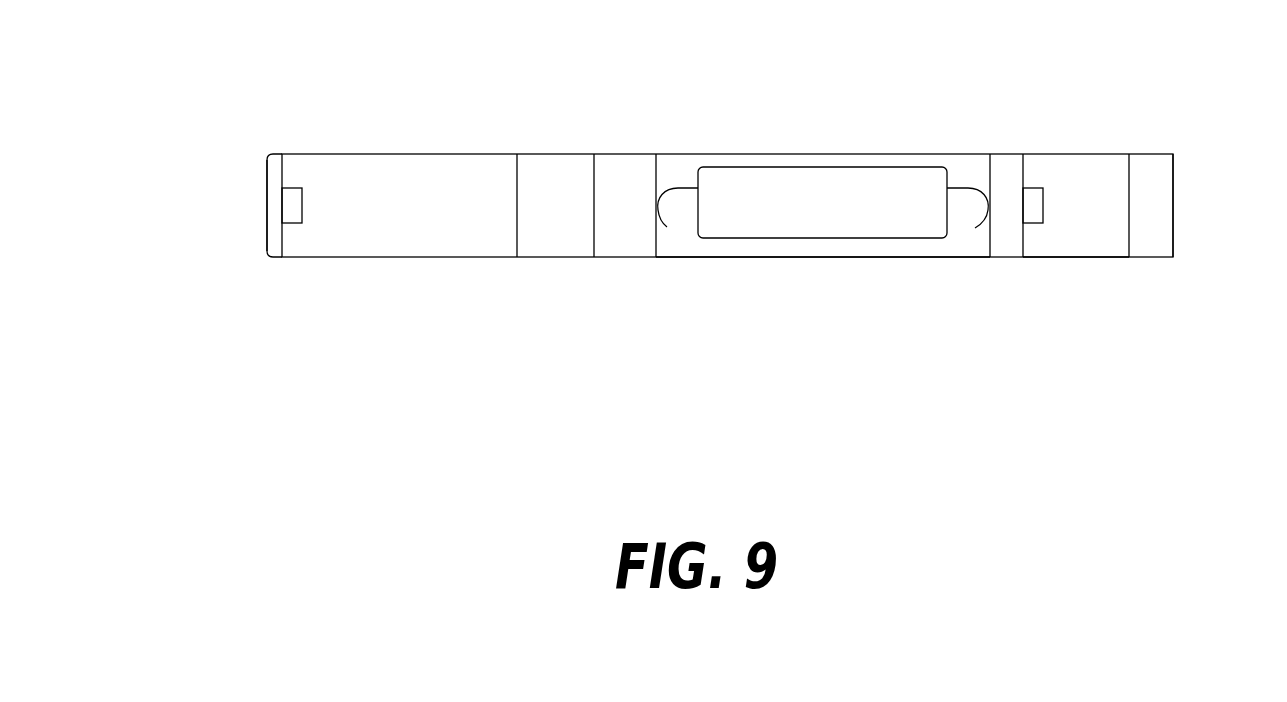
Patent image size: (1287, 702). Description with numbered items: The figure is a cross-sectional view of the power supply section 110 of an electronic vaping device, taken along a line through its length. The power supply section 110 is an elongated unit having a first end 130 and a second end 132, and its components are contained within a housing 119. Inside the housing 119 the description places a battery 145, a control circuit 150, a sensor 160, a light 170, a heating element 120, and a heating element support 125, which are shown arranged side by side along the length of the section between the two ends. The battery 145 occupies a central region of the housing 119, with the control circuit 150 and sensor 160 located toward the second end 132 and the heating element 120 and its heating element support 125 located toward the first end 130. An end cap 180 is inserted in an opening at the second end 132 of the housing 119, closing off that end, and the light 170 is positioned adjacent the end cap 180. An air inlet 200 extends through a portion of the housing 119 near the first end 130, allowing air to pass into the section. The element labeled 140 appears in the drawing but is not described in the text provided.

The power supply section 110 is at (1075, 154).
The housing 119 is at (847, 257).
The heating element 120 is at (1043, 205).
The heating element support 125 is at (1004, 167).
The first end 130 is at (1173, 154).
The second end 132 is at (291, 151).
The mounting bracket 140 is at (697, 248).
The battery 145 is at (818, 188).
The control circuit 150 is at (622, 175).
The sensor 160 is at (538, 173).
The light 170 is at (302, 205).
The end cap 180 is at (267, 195).
The air inlet 200 is at (1063, 262).